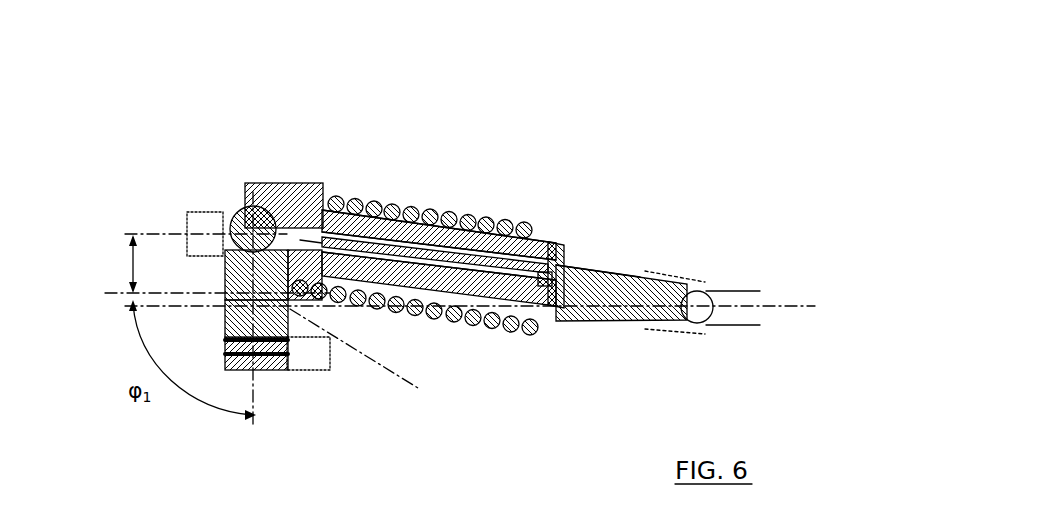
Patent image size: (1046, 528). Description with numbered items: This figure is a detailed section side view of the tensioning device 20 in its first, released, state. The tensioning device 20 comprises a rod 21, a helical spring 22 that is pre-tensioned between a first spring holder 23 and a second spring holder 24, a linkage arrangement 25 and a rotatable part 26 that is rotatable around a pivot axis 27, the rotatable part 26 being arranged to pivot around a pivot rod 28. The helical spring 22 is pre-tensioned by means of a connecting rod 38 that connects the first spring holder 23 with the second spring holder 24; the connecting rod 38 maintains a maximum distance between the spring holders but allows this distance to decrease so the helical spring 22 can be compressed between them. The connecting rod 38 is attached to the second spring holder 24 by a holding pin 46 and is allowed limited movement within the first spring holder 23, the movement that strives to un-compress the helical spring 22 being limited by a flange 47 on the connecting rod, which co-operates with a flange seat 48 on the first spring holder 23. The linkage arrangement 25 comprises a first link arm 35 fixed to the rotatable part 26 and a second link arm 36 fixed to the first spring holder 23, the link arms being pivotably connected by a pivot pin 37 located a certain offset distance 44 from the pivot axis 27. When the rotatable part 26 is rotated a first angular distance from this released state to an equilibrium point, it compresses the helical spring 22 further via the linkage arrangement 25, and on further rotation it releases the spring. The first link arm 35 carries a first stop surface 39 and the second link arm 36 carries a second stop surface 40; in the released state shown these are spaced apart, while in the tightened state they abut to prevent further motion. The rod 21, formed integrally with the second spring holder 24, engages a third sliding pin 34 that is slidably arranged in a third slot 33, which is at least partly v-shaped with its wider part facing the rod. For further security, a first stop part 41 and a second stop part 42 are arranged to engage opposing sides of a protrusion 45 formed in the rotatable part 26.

The tensioning device 20 is at (666, 209).
The rod 21 is at (593, 273).
The helical spring 22 is at (472, 236).
The first spring holder 23 is at (277, 282).
The second spring holder 24 is at (544, 272).
The linkage arrangement 25 is at (299, 181).
The rotatable part 26 is at (360, 196).
The pivot axis 27 is at (364, 362).
The pivot rod 28 is at (263, 290).
The third slot 33 is at (715, 320).
The third sliding pin 34 is at (692, 318).
The first link arm 35 is at (252, 207).
The second link arm 36 is at (281, 183).
The pivot pin 37 is at (245, 212).
The connecting rod 38 is at (510, 280).
The first stop surface 39 is at (221, 249).
The second stop surface 40 is at (247, 189).
The first stop part 41 is at (210, 227).
The second stop part 42 is at (313, 348).
The offset distance 44 is at (120, 264).
The protrusion 45 is at (273, 370).
The holding pin 46 is at (568, 265).
The flange 47 is at (403, 237).
The flange seat 48 is at (370, 260).